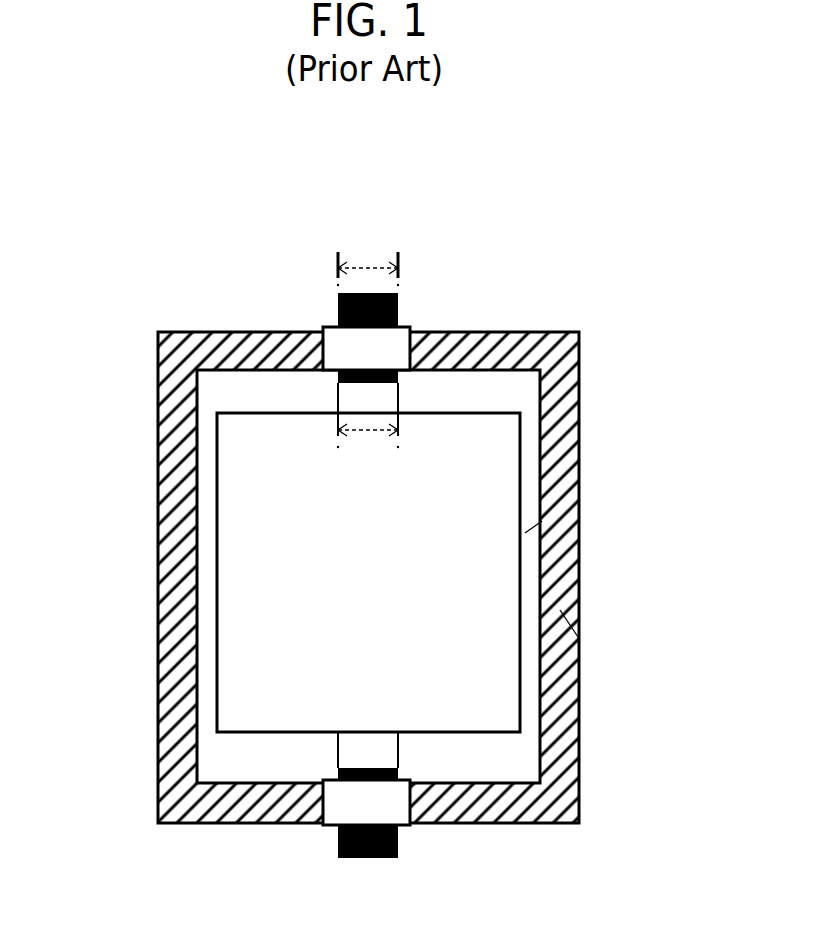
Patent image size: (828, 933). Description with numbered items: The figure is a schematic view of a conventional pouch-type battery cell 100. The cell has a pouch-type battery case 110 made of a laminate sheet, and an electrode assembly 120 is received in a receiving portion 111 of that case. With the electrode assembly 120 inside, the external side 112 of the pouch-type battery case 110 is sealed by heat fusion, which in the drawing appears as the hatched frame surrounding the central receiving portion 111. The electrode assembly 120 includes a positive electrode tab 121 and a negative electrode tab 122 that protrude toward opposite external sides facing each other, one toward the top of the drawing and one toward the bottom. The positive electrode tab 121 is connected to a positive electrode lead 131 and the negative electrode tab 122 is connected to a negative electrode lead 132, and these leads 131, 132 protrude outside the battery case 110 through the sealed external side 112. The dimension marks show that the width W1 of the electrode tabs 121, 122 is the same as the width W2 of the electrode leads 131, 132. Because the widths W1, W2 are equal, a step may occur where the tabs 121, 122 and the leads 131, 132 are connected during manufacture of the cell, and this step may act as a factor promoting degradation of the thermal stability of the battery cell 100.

The battery cell 100 is at (56, 283).
The pouch-type battery case 110 is at (579, 425).
The receiving portion 111 is at (580, 505).
The external side 112 is at (578, 637).
The electrode assembly 120 is at (217, 497).
The positive electrode tab 121 is at (338, 392).
The negative electrode tab 122 is at (338, 757).
The positive electrode lead 131 is at (399, 287).
The negative electrode lead 132 is at (398, 858).
The width of the electrode tabs W1 is at (370, 433).
The width of the electrode leads W2 is at (368, 263).